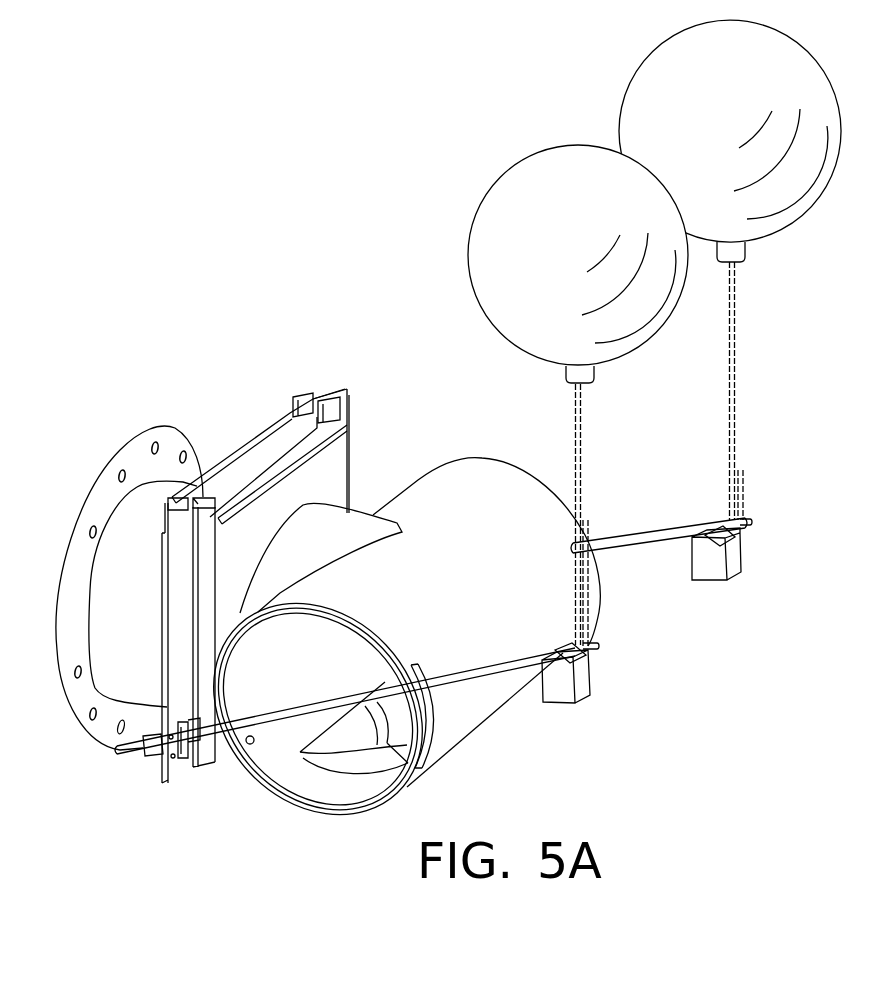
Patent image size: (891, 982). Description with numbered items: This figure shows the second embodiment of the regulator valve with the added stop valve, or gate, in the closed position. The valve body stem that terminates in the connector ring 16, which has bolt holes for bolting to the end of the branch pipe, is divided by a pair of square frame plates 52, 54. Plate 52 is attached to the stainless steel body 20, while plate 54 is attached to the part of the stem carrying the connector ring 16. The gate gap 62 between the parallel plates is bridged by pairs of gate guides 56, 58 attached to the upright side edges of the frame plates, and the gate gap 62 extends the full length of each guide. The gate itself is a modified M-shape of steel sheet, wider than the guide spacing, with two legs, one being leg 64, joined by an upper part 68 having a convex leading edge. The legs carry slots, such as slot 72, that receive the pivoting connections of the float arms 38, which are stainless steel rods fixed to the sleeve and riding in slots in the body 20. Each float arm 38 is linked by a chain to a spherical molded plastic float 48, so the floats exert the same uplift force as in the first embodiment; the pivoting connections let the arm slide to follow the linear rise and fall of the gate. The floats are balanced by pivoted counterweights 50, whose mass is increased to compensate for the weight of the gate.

The connector ring 16 is at (90, 502).
The body 20 is at (385, 658).
The rods 38 is at (492, 670).
The float 48 is at (850, 231).
The counterweights 50 is at (580, 685).
The frame plate 52 is at (332, 455).
The frame plate 54 is at (266, 421).
The gate guide 56 is at (203, 530).
The gate guide 58 is at (170, 500).
The gate gap 62 is at (318, 400).
The leg 64 is at (180, 682).
The upper part 68 is at (248, 490).
The slot 72 is at (183, 765).